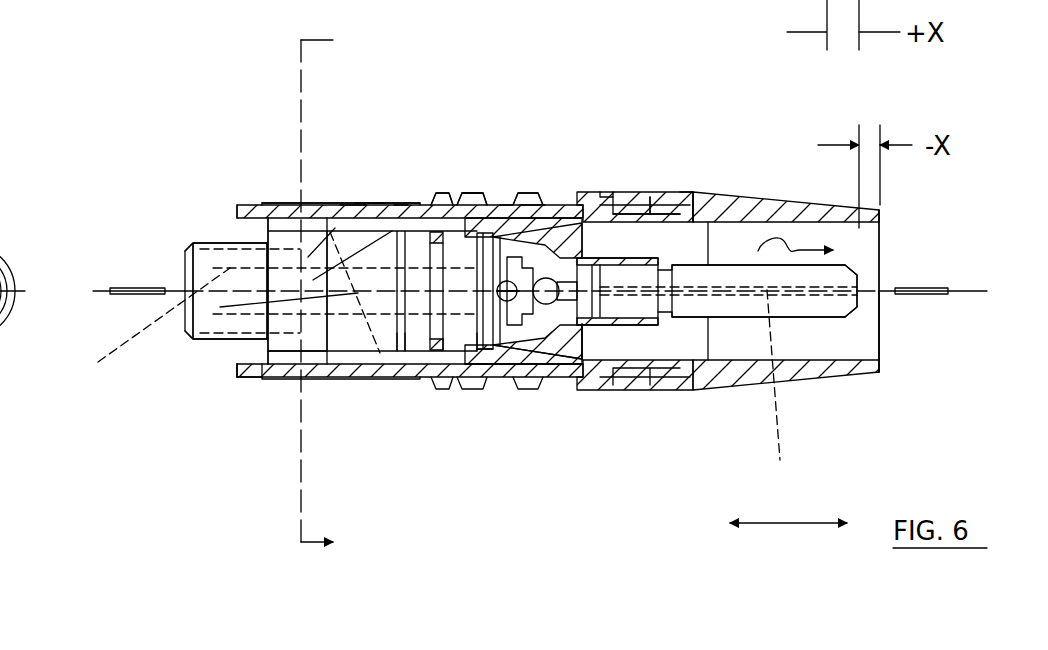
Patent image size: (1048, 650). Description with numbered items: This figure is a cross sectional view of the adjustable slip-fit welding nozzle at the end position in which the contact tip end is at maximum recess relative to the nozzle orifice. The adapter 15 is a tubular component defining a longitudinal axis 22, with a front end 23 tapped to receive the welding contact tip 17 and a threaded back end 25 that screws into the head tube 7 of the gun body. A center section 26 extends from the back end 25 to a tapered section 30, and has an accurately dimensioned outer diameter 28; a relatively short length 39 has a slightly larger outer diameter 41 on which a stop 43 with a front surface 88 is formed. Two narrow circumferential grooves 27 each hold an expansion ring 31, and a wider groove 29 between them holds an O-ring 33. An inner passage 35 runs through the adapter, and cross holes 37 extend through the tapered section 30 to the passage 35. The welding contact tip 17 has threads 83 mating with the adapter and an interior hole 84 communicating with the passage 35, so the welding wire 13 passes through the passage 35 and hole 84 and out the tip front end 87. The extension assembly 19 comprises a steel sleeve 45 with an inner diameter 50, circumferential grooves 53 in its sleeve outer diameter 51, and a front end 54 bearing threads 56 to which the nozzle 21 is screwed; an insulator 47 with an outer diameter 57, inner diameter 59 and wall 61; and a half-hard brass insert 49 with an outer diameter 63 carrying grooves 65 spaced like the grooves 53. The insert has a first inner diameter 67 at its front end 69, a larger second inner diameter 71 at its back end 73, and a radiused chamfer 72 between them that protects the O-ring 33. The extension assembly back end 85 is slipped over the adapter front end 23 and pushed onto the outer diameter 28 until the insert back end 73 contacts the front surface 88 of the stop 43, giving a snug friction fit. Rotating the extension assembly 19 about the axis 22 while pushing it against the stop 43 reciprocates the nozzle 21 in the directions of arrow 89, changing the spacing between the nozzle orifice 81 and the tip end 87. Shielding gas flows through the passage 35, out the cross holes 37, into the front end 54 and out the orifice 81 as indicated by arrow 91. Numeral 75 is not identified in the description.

The head tube 7 is at (329, 293).
The welding wire 13 is at (913, 286).
The adapter 15 is at (523, 383).
The welding contact tip 17 is at (810, 320).
The extension assembly 19 is at (640, 188).
The nozzle 21 is at (766, 197).
The longitudinal axis 22 is at (885, 298).
The front end 23 is at (647, 368).
The back end 25 is at (197, 340).
The center section 26 is at (213, 325).
The circumferential grooves 27 is at (405, 365).
The outer diameter 28 is at (462, 187).
The groove 29 is at (460, 383).
The tapered section 30 is at (550, 387).
The expansion ring 31 is at (401, 201).
The O-ring 33 is at (435, 385).
The inner passage 35 is at (145, 331).
The cross holes 37 is at (548, 362).
The relatively short length 39 is at (247, 382).
The outer diameter 41 is at (313, 353).
The stop 43 is at (289, 204).
The sleeve 45 is at (593, 188).
The insulator 47 is at (362, 198).
The insert 49 is at (379, 199).
The inner diameter 50 is at (277, 205).
The sleeve outer diameter 51 is at (283, 382).
The circumferential grooves 53 is at (436, 195).
The front end 54 is at (687, 192).
The threads 56 is at (653, 192).
The outer diameter 57 is at (247, 204).
The inner diameter 59 is at (243, 216).
The wall 61 is at (234, 380).
The outer diameter 63 is at (532, 214).
The grooves 65 is at (495, 383).
The first inner diameter 67 is at (605, 247).
The front end 69 is at (578, 375).
The second inner diameter 71 is at (308, 257).
The radiused chamfer 72 is at (313, 280).
The back end 73 is at (362, 380).
The groove 75 is at (435, 193).
The orifice 81 is at (882, 253).
The threads 83 is at (690, 367).
The interior hole 84 is at (785, 391).
The back end 85 is at (233, 362).
The tip front end 87 is at (860, 302).
The front surface 88 is at (353, 201).
The arrow 89 is at (792, 525).
The arrow 91 is at (778, 248).